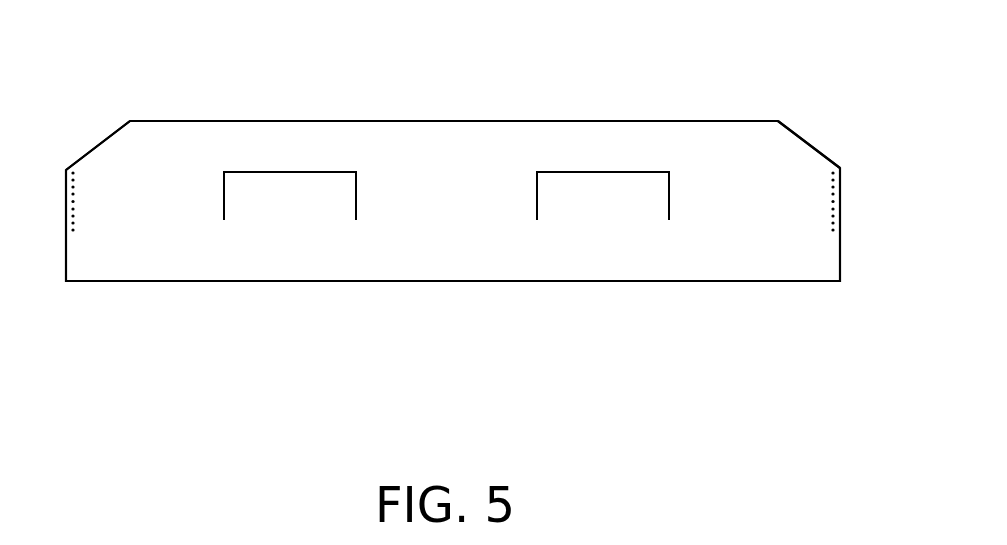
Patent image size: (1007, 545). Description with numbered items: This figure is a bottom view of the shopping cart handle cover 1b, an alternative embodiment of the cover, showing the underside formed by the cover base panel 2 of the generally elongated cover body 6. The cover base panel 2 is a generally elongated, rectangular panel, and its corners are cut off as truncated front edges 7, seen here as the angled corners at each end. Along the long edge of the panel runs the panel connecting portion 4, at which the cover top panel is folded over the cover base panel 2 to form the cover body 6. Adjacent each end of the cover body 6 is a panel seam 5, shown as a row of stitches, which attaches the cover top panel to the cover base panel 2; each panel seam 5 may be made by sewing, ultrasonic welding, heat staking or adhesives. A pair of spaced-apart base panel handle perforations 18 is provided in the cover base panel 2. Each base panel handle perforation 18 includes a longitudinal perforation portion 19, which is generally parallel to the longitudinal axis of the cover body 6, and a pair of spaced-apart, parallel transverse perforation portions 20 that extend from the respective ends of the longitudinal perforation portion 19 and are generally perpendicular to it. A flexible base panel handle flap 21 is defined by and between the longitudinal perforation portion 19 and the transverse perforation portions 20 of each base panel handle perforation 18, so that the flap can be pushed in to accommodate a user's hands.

The shopping cart handle cover 1b is at (441, 80).
The cover base panel 2 is at (648, 137).
The panel connecting portion 4 is at (653, 282).
The panel seam 5 is at (77, 180).
The cover body 6 is at (172, 110).
The truncated front edges 7 is at (98, 145).
The base panel handle perforation 18 is at (347, 162).
The longitudinal perforation portion 19 is at (268, 171).
The transverse perforation portions 20 is at (224, 197).
The base panel handle flap 21 is at (343, 184).